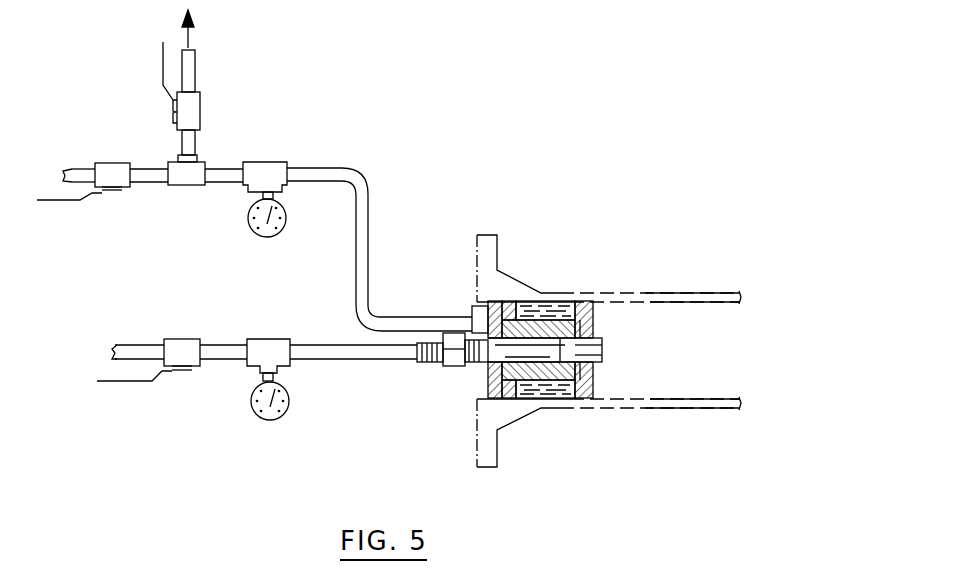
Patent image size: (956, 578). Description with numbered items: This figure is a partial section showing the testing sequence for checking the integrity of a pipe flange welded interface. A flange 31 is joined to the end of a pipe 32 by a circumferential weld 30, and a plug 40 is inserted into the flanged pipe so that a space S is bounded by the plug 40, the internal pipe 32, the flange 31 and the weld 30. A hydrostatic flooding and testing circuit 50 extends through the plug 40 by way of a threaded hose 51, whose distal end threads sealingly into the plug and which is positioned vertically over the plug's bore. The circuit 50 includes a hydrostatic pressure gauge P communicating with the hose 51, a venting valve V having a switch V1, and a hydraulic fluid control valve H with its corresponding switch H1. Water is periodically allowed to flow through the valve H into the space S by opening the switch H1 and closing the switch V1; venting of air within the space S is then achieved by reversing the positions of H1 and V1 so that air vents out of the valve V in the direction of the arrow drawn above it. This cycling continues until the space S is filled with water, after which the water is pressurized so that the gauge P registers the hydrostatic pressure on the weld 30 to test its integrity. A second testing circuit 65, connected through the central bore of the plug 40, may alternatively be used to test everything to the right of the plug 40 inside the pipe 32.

The weld 30 is at (567, 348).
The flange 31 is at (488, 252).
The pipe 32 is at (643, 297).
The plug 40 is at (595, 382).
The hydrostatic flooding and testing circuit 50 is at (338, 152).
The threaded hose 51 is at (368, 220).
The second testing circuit 65 is at (328, 368).
The space S is at (534, 402).
The venting valve V is at (196, 108).
The venting valve switch V1 is at (160, 76).
The hydraulic fluid control valve H is at (125, 182).
The hydraulic fluid control valve switch H1 is at (67, 201).
The hydrostatic pressure gauge P is at (260, 232).